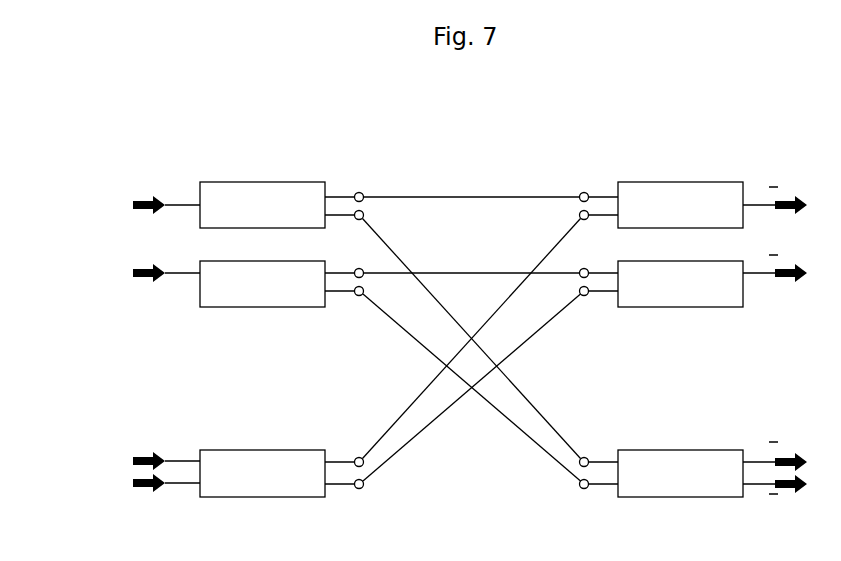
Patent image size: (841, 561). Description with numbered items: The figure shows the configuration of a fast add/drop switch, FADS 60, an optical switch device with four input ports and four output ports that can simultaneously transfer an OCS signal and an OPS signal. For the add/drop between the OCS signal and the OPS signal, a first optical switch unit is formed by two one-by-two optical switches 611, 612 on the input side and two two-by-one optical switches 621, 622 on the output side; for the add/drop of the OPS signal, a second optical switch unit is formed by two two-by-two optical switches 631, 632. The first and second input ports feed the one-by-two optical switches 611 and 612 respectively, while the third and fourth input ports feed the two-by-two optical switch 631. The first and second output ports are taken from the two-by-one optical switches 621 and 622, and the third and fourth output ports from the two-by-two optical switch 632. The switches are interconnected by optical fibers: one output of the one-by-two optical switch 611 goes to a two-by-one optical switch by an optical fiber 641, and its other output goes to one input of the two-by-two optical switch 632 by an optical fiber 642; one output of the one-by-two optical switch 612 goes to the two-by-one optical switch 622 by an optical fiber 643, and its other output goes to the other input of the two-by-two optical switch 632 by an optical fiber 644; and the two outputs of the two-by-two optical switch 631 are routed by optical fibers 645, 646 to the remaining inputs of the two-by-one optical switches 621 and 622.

The FADS 60 is at (530, 158).
The 1×2 optical switch 611 is at (262, 181).
The 1×2 optical switch 612 is at (266, 308).
The 2×1 optical switch 621 is at (680, 181).
The 2×1 optical switch 622 is at (684, 308).
The 2×2 optical switch 631 is at (262, 449).
The 2×2 optical switch 632 is at (680, 449).
The optical fiber 641 is at (466, 193).
The optical fiber 642 is at (388, 242).
The optical fiber 643 is at (466, 269).
The optical fiber 644 is at (390, 318).
The optical fiber 645 is at (406, 410).
The optical fiber 646 is at (430, 425).